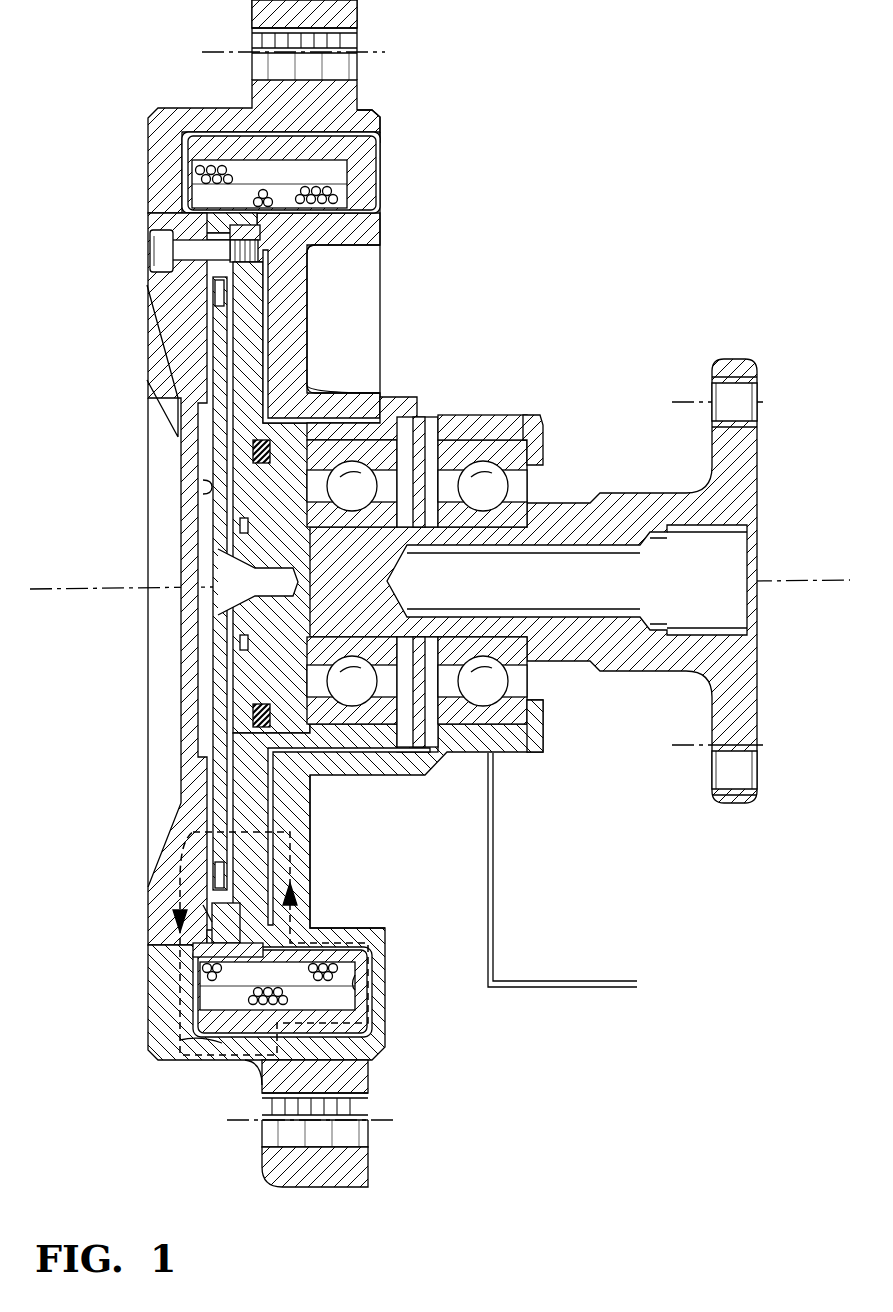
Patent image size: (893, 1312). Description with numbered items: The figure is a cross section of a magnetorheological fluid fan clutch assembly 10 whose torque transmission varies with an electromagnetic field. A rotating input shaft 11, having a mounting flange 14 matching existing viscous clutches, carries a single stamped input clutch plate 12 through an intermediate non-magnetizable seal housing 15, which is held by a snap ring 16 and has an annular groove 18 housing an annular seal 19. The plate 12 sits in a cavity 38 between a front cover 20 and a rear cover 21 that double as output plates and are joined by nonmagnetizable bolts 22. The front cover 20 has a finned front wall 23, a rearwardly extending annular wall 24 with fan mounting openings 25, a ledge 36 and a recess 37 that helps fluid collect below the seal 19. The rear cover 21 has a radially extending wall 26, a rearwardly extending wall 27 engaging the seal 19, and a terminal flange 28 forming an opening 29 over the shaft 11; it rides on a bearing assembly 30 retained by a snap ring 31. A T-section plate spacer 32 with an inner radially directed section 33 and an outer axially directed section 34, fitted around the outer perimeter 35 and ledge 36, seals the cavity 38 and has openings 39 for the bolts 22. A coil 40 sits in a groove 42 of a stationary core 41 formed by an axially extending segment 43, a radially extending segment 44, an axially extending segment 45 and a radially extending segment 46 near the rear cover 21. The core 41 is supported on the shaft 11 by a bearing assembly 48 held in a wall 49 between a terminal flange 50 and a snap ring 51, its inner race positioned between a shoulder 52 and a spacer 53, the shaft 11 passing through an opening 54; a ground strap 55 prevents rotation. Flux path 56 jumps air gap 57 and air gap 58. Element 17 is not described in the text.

The magnetorheological fluid fan clutch assembly 10 is at (521, 293).
The input shaft 11 is at (606, 500).
The input clutch plate 12 is at (216, 350).
The mounting flange 14 is at (746, 360).
The seal housing 15 is at (243, 504).
The snap ring 16 is at (246, 640).
The bolt 17 is at (246, 533).
The annular groove 18 is at (253, 452).
The annular seal 19 is at (253, 717).
The front cover 20 is at (156, 292).
The rear cover 21 is at (258, 324).
The bolts 22 is at (148, 249).
The finned front wall 23 is at (188, 773).
The annular wall 24 is at (262, 1072).
The fan mounting openings 25 is at (356, 1142).
The radially extending wall 26 is at (270, 284).
The rearwardly extending wall 27 is at (306, 422).
The terminal flange 28 is at (409, 722).
The opening 29 is at (402, 693).
The bearing assembly 30 is at (390, 447).
The snap ring 31 is at (301, 724).
The plate spacer 32 is at (211, 916).
The inner radially directed section 33 is at (238, 923).
The outer axially directed section 34 is at (192, 222).
The outer perimeter 35 is at (247, 228).
The ledge 36 is at (186, 222).
The recess 37 is at (203, 490).
The cavity 38 is at (208, 280).
The openings 39 is at (200, 245).
The coil 40 is at (344, 998).
The stationary core 41 is at (380, 145).
The groove 42 is at (352, 978).
The axially extending segment 43 is at (250, 145).
The radially extending segment 44 is at (378, 177).
The axially extending segment 45 is at (334, 236).
The radially extending segment 46 is at (304, 348).
The bearing assembly 48 is at (508, 440).
The wall 49 is at (496, 413).
The terminal flange 50 is at (538, 450).
The snap ring 51 is at (436, 447).
The shoulder 52 is at (527, 503).
The spacer 53 is at (420, 522).
The opening 54 is at (541, 697).
The ground strap 55 is at (494, 905).
The flux path 56 is at (178, 1018).
The air gap 57 is at (222, 1043).
The air gap 58 is at (271, 824).